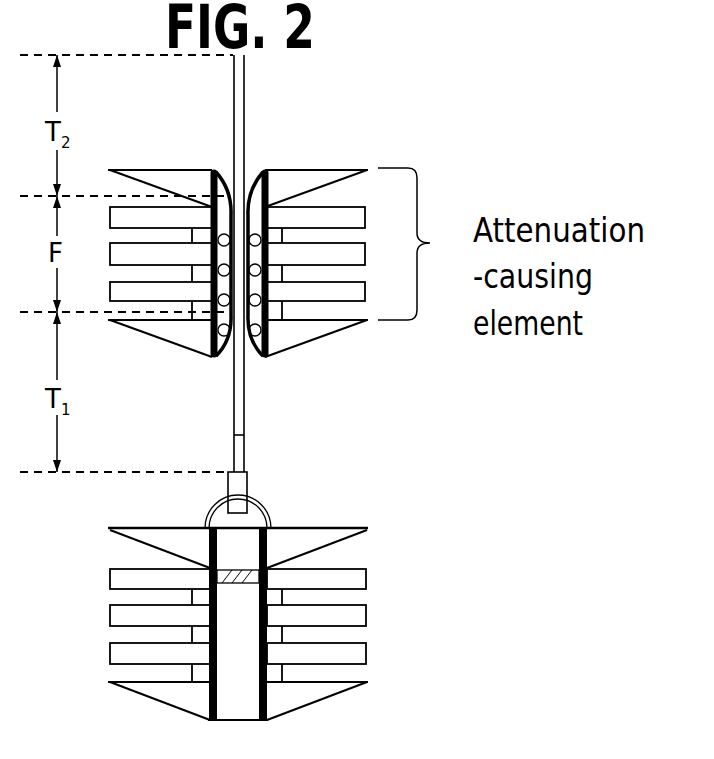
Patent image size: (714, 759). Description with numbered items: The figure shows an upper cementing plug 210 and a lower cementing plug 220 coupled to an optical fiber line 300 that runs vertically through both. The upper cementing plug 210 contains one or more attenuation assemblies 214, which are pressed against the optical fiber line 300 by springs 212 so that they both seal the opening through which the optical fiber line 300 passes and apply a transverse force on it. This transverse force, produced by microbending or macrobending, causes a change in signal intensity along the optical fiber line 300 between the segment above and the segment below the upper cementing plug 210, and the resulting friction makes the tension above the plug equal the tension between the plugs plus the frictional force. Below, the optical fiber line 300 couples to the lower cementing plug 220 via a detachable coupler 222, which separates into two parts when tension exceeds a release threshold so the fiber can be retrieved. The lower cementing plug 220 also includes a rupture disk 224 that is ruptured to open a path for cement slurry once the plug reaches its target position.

The optical fiber line 300 is at (245, 129).
The upper cementing plug 210 is at (277, 207).
The attenuation assembly 214 is at (238, 167).
The spring 212 is at (231, 358).
The detachable coupler 222 is at (268, 432).
The lower cementing plug 220 is at (330, 528).
The rupture disk 224 is at (252, 588).